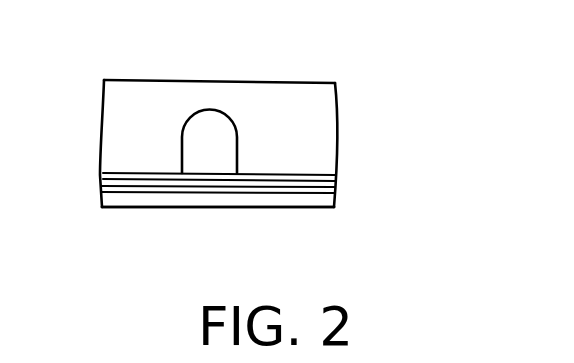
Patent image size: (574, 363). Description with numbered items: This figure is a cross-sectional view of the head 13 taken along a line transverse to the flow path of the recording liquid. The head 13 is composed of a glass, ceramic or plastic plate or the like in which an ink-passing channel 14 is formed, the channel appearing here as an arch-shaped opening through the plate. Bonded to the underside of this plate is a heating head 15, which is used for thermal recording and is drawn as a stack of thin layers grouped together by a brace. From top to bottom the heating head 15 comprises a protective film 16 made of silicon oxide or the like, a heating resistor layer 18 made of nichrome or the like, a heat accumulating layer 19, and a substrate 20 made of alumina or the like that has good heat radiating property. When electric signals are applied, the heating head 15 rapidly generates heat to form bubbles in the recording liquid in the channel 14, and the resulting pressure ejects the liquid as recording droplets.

The head 13 is at (117, 80).
The ink-passing channel 14 is at (216, 108).
The heating head 15 is at (345, 176).
The protective film 16 is at (285, 175).
The heating resistor layer 18 is at (300, 181).
The heat accumulating layer 19 is at (311, 193).
The substrate 20 is at (295, 203).